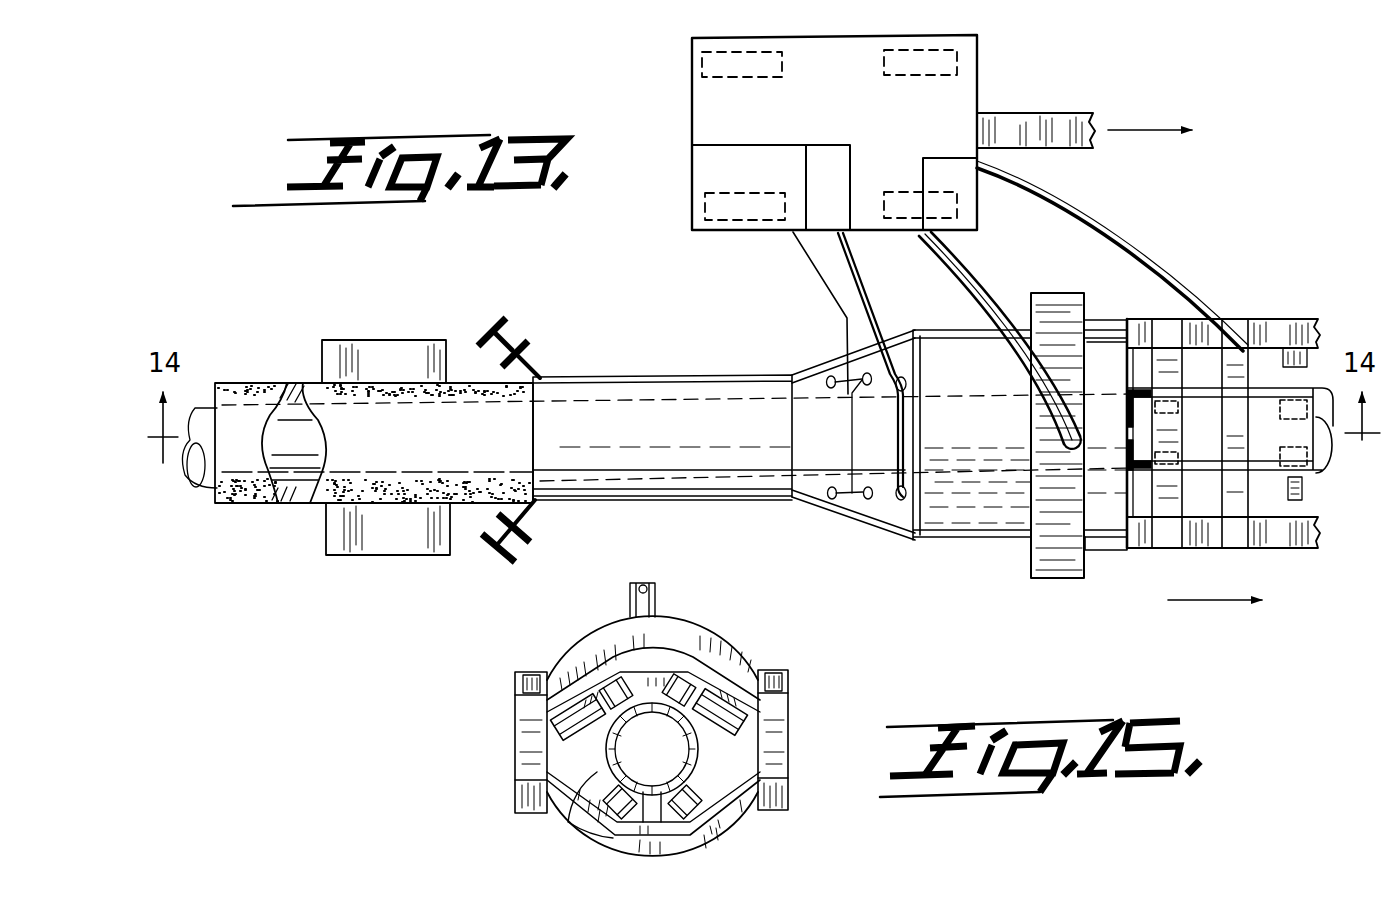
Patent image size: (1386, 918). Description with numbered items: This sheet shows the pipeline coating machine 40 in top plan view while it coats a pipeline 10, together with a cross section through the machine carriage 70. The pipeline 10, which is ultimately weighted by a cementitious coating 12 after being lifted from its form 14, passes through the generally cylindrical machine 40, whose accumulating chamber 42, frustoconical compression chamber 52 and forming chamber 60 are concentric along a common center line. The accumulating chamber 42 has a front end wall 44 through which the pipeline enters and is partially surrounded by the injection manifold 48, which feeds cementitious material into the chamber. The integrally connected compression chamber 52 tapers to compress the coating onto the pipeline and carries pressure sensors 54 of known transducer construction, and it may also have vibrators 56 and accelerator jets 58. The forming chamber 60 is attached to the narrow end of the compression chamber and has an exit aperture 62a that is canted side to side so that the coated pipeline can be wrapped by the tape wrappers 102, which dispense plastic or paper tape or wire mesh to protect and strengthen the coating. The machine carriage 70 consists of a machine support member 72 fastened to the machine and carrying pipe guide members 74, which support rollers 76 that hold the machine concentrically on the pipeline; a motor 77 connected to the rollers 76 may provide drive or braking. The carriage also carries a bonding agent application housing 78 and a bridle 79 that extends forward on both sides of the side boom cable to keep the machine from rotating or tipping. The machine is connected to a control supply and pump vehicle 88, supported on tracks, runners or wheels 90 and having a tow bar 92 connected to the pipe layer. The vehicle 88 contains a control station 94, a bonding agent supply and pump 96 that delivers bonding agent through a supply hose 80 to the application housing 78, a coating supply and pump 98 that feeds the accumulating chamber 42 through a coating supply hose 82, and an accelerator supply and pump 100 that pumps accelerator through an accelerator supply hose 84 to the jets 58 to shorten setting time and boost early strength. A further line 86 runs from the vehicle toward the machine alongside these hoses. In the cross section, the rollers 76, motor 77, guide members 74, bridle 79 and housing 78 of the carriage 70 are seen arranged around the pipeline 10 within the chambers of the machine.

In FIG. 15, the pipeline 10 is at (613, 782).
In FIG. 13, the cementitious coating 12 is at (232, 400).
In FIG. 13, the form 14 is at (347, 340).
In FIG. 13, the pipeline coating machine 40 is at (700, 370).
In FIG. 15, the pipeline coating machine 40 is at (577, 650).
In FIG. 13, the accumulating chamber 42 is at (985, 533).
In FIG. 15, the front end wall 44 is at (565, 758).
In FIG. 13, the injection manifold or header 48 is at (1073, 560).
In FIG. 15, the injection manifold or header 48 is at (663, 633).
In FIG. 13, the compression chamber 52 is at (856, 505).
In FIG. 13, the pressure sensors 54 is at (863, 374).
In FIG. 13, the vibrators 56 is at (827, 377).
In FIG. 13, the accelerator jets 58 is at (901, 377).
In FIG. 13, the forming chamber 60 is at (622, 376).
In FIG. 13, the exit aperture 62a is at (516, 440).
In FIG. 13, the machine carriage 70 is at (1257, 307).
In FIG. 15, the machine carriage 70 is at (515, 675).
In FIG. 13, the machine support member 72 is at (1123, 551).
In FIG. 13, the pipe guide members 74 is at (1163, 340).
In FIG. 15, the pipe guide members 74 is at (730, 690).
In FIG. 13, the rollers 76 is at (1294, 548).
In FIG. 15, the rollers 76 is at (610, 667).
In FIG. 15, the motor 77 is at (547, 720).
In FIG. 13, the bonding agent application housing 78 is at (1237, 360).
In FIG. 13, the bridle 79 is at (1296, 320).
In FIG. 15, the bridle 79 is at (532, 678).
In FIG. 13, the supply hose 80 is at (1131, 245).
In FIG. 13, the coating supply hose 82 is at (982, 292).
In FIG. 15, the coating supply hose 82 is at (623, 592).
In FIG. 13, the accelerator supply hose 84 is at (853, 273).
In FIG. 13, the wire 86 is at (806, 265).
In FIG. 13, the control supply and pump vehicle 88 is at (689, 146).
In FIG. 13, the tracks, runners or wheels 90 is at (965, 50).
In FIG. 13, the tow bar 92 is at (1055, 118).
In FIG. 13, the control station 94 is at (748, 179).
In FIG. 13, the bonding agent supply and pump 96 is at (955, 182).
In FIG. 13, the coating supply and pump 98 is at (896, 114).
In FIG. 13, the accelerator supply and pump 100 is at (845, 179).
In FIG. 13, the tape wrappers 102 is at (490, 322).